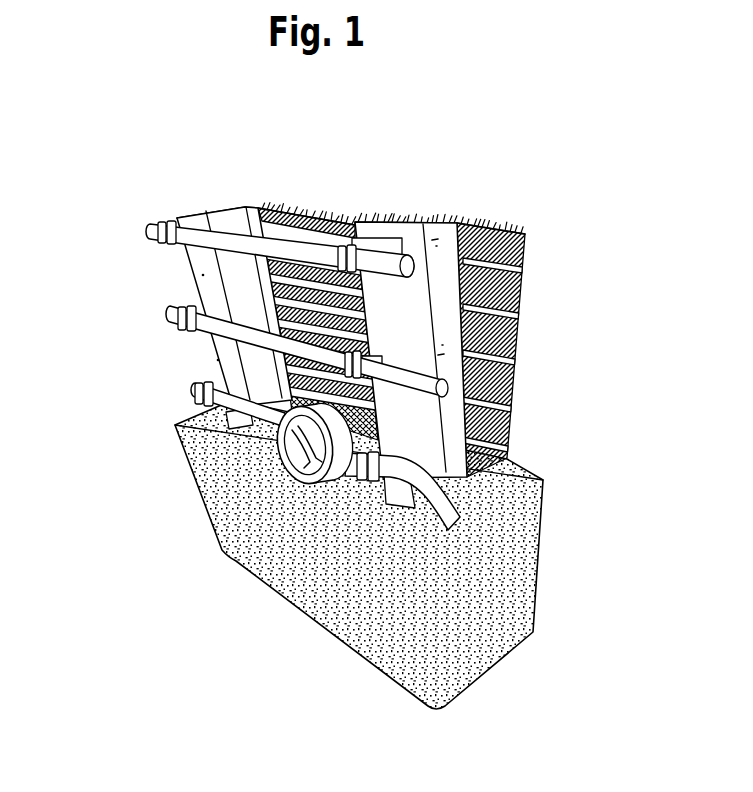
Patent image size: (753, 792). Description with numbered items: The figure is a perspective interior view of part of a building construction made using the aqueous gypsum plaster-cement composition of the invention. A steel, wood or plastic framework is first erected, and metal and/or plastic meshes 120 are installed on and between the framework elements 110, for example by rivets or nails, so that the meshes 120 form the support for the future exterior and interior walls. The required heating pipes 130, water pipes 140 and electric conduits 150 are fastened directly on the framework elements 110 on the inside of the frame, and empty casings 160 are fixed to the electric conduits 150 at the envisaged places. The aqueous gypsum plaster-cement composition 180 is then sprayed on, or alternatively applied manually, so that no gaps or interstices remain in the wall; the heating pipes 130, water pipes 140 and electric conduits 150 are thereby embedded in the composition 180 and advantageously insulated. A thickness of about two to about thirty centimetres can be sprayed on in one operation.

The framework element 110 is at (186, 263).
The mesh 120 is at (520, 250).
The heating pipe 130 is at (146, 221).
The water pipe 140 is at (158, 315).
The electric conduit 150 is at (187, 387).
The empty casing 160 is at (282, 457).
The aqueous gypsum plaster-cement composition 180 is at (270, 553).